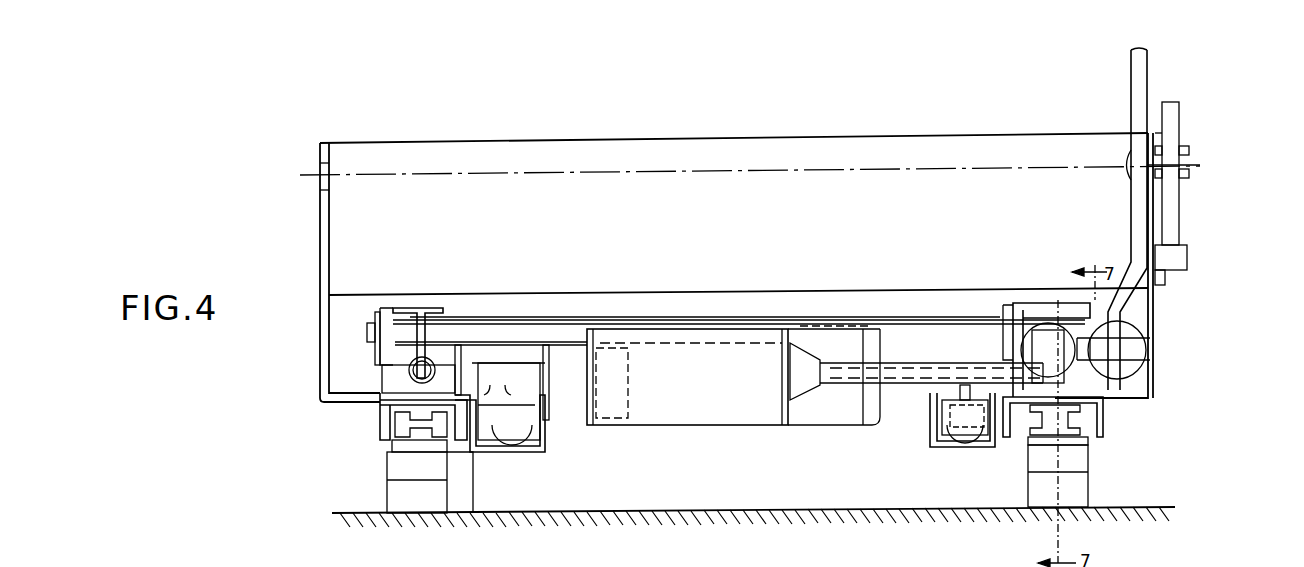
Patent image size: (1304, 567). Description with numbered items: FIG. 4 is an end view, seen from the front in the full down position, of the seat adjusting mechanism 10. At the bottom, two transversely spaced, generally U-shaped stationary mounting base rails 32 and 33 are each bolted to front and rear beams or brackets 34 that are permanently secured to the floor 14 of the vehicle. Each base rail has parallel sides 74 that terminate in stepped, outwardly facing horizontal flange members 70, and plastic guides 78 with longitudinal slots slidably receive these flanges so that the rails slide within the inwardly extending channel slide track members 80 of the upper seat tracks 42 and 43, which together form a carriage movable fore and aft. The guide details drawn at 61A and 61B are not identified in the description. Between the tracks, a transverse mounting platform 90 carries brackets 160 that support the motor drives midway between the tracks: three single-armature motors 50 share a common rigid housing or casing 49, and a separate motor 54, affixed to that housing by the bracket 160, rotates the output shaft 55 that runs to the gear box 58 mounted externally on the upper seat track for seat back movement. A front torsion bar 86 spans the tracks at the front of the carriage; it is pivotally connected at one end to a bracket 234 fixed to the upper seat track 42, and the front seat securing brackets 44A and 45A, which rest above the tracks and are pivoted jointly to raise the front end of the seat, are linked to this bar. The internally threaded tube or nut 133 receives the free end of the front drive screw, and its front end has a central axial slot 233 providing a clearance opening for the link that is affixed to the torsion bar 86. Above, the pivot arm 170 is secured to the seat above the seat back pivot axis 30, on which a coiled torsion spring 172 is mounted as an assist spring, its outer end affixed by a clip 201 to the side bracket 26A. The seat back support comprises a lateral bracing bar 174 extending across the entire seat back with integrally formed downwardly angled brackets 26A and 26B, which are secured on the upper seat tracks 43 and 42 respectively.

The mechanism 10 is at (988, 125).
The floor 14 is at (1015, 512).
The side bracket 26A is at (1159, 371).
The side bracket 26B is at (317, 240).
The pivot axis 30 is at (1209, 160).
The mounting base rail 32 is at (400, 446).
The mounting base rail 33 is at (1088, 448).
The mounting bracket 34 is at (450, 495).
The upper seat track 42 is at (380, 410).
The upper seat track 43 is at (1105, 420).
The seat securing bracket 44A is at (425, 312).
The seat securing bracket 45A is at (1045, 303).
The motor housing 49 is at (872, 425).
The motor 50 is at (810, 425).
The motor 54 is at (716, 425).
The output shaft 55 is at (905, 383).
The gear box 58 is at (1146, 343).
The right roller assembly 61A is at (945, 440).
The left roller assembly 61B is at (530, 418).
The flange member 70 is at (382, 432).
The side 74 is at (1053, 443).
The plastic guide 78 is at (1095, 425).
The channel slide track member 80 is at (462, 455).
The front torsion bar 86 is at (523, 320).
The mounting platform 90 is at (522, 452).
The internally threaded tube 133 is at (395, 352).
The bracket 160 is at (549, 420).
The pivot arm 170 is at (1140, 70).
The coiled torsion spring 172 is at (1176, 102).
The lateral bracing bar 174 is at (772, 153).
The clip 201 is at (1186, 258).
The central axial slot 233 is at (408, 378).
The bracket 234 is at (377, 312).